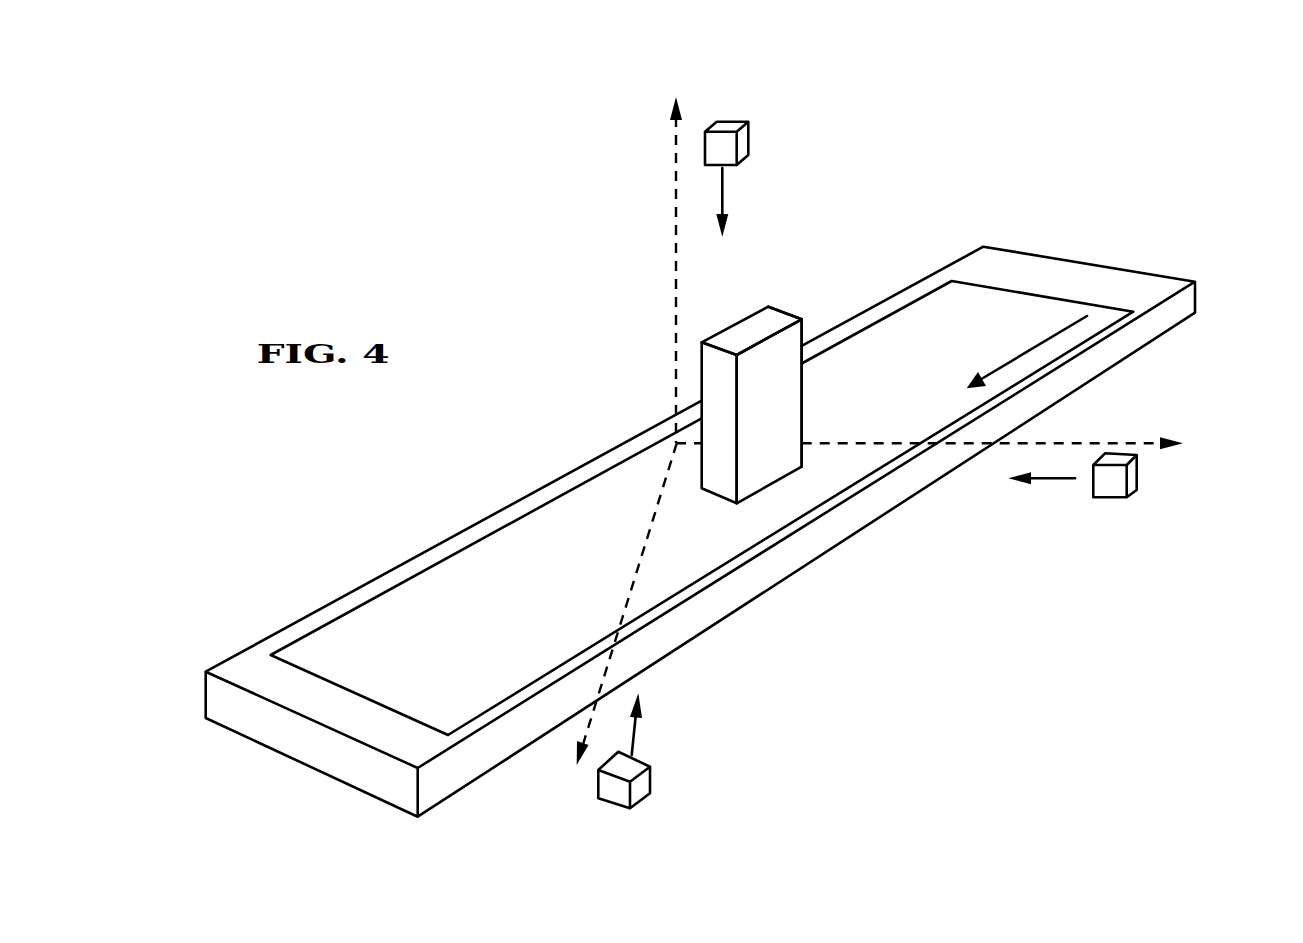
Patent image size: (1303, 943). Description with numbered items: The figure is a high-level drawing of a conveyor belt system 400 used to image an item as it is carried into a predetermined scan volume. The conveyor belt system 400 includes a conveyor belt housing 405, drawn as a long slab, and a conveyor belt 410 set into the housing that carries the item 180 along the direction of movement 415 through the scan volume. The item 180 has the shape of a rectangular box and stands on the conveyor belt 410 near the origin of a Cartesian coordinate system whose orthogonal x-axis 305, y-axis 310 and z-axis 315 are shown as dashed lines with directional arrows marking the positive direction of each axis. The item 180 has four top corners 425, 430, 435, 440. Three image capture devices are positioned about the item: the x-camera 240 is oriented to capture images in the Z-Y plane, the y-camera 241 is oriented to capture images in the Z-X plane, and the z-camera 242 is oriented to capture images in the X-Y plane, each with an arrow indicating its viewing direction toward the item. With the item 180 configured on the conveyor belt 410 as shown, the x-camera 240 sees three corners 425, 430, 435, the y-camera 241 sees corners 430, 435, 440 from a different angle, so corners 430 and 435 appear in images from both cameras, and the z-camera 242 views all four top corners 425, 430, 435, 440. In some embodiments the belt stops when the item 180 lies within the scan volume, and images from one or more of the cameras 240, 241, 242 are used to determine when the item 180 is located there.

The conveyor belt system 400 is at (338, 86).
The conveyor belt housing 405 is at (242, 663).
The conveyor belt 410 is at (347, 635).
The direction of movement through the scan volume 415 is at (1062, 328).
The item 180 is at (767, 458).
The top corner 425 is at (702, 342).
The top corner 430 is at (737, 355).
The top corner 435 is at (802, 319).
The top corner 440 is at (768, 307).
The x-axis 305 is at (635, 577).
The y-axis 310 is at (1090, 443).
The z-axis 315 is at (676, 238).
The x-camera 240 is at (615, 793).
The y-camera 241 is at (1110, 490).
The z-camera 242 is at (748, 135).